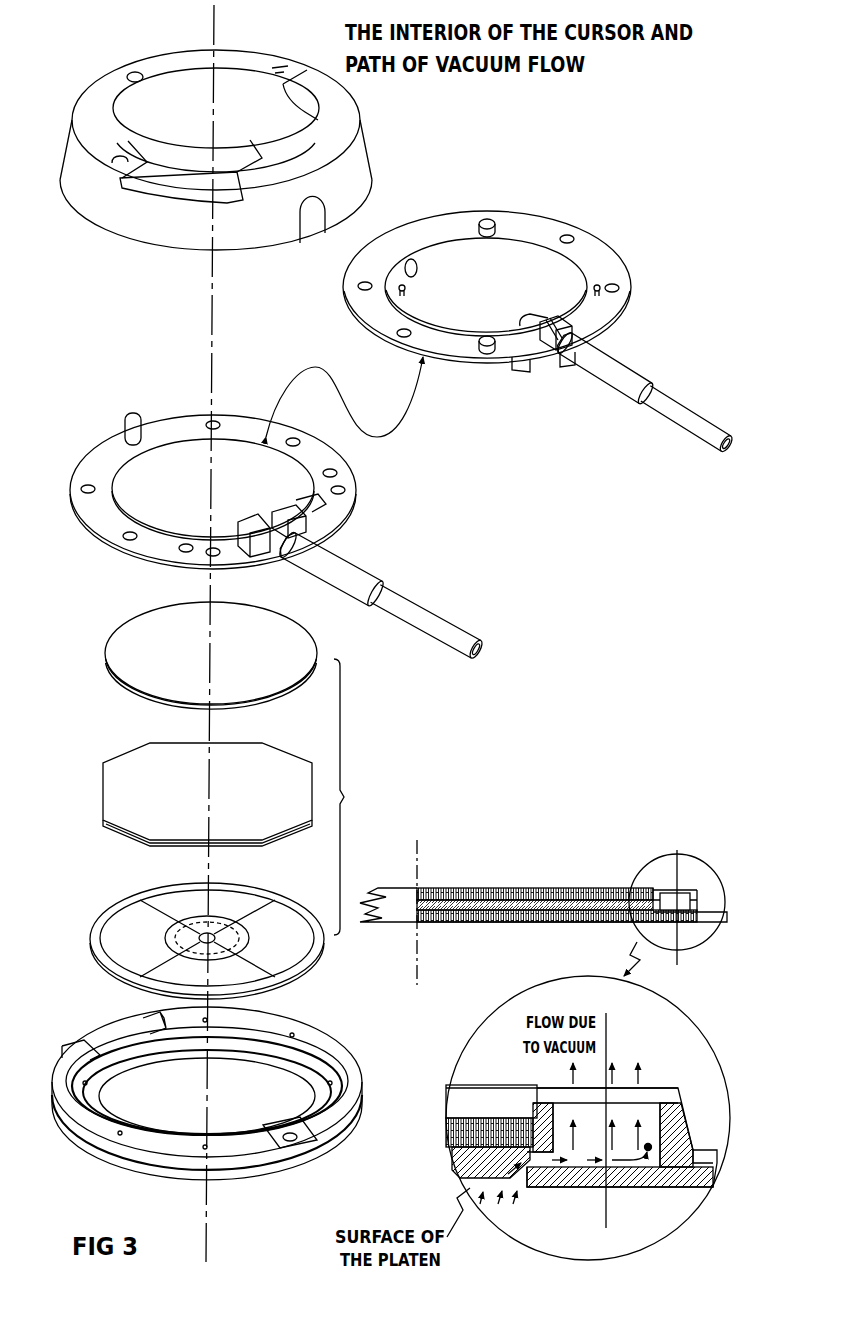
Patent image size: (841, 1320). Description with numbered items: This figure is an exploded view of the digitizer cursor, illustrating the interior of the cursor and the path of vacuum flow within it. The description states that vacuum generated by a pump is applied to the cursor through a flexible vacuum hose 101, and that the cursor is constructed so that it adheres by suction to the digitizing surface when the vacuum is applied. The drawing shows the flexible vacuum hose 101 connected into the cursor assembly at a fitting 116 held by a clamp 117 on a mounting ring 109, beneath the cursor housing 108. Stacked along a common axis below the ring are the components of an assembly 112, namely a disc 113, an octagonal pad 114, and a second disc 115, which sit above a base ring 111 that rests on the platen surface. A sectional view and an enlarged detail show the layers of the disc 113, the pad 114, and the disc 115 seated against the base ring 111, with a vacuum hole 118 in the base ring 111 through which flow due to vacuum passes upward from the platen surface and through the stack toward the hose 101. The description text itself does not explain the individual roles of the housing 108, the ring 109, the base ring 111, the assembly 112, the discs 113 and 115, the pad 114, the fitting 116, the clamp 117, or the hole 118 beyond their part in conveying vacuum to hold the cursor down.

The flexible vacuum hose 101 is at (688, 439).
The cursor housing 108 is at (357, 172).
The mounting ring 109 is at (534, 224).
The base ring 111 is at (343, 1143).
The filter assembly 112 is at (358, 797).
The porous disc 113 is at (118, 632).
The octagonal filter pad 114 is at (108, 763).
The distribution disc 115 is at (100, 912).
The hose fitting 116 is at (537, 324).
The clamp 117 is at (556, 330).
The vacuum hole 118 is at (290, 1145).